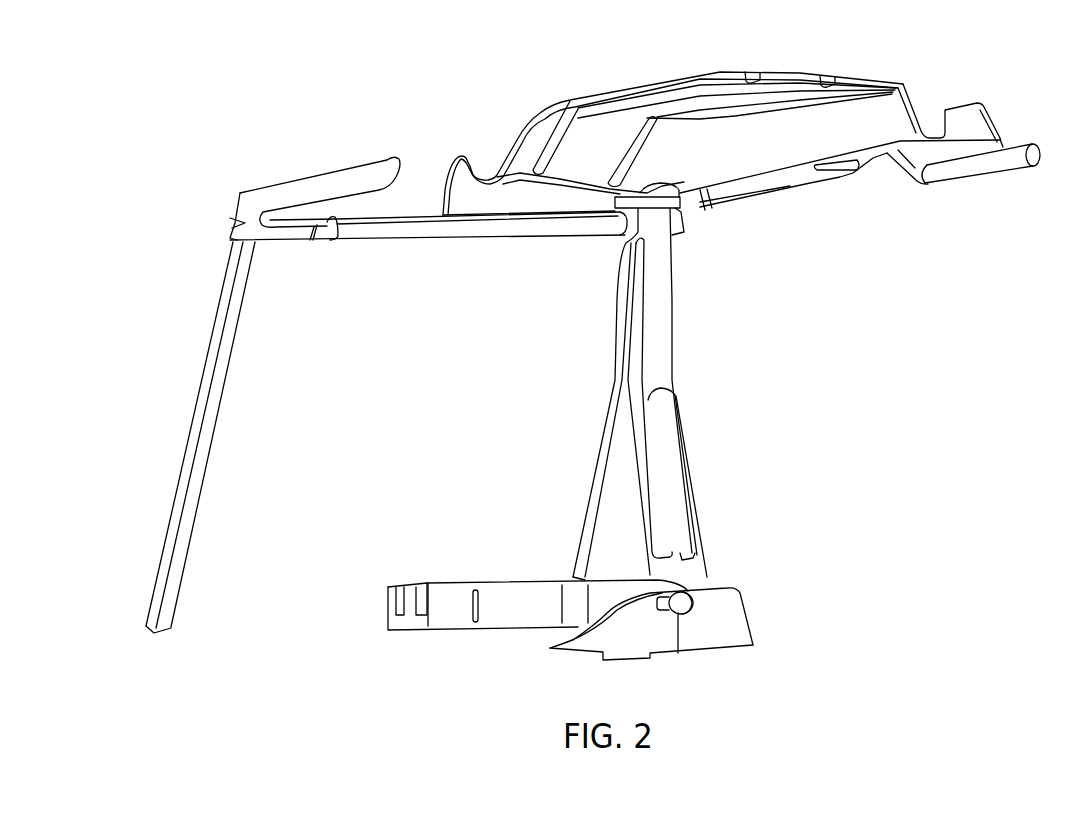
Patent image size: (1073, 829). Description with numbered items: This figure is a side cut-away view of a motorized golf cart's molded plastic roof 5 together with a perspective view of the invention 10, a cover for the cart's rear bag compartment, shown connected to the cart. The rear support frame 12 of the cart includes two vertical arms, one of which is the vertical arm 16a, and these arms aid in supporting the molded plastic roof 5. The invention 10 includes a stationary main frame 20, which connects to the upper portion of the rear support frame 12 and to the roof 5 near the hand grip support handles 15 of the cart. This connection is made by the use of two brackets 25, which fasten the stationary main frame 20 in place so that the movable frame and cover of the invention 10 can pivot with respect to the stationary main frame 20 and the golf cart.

The molded plastic roof 5 is at (820, 98).
The invention 10 is at (384, 145).
The rear support frame member 12 is at (657, 270).
The hand grip support handles 15 is at (963, 172).
The vertical arm 16a is at (670, 352).
The stationary main frame 20 is at (406, 247).
The brackets 25 is at (290, 188).